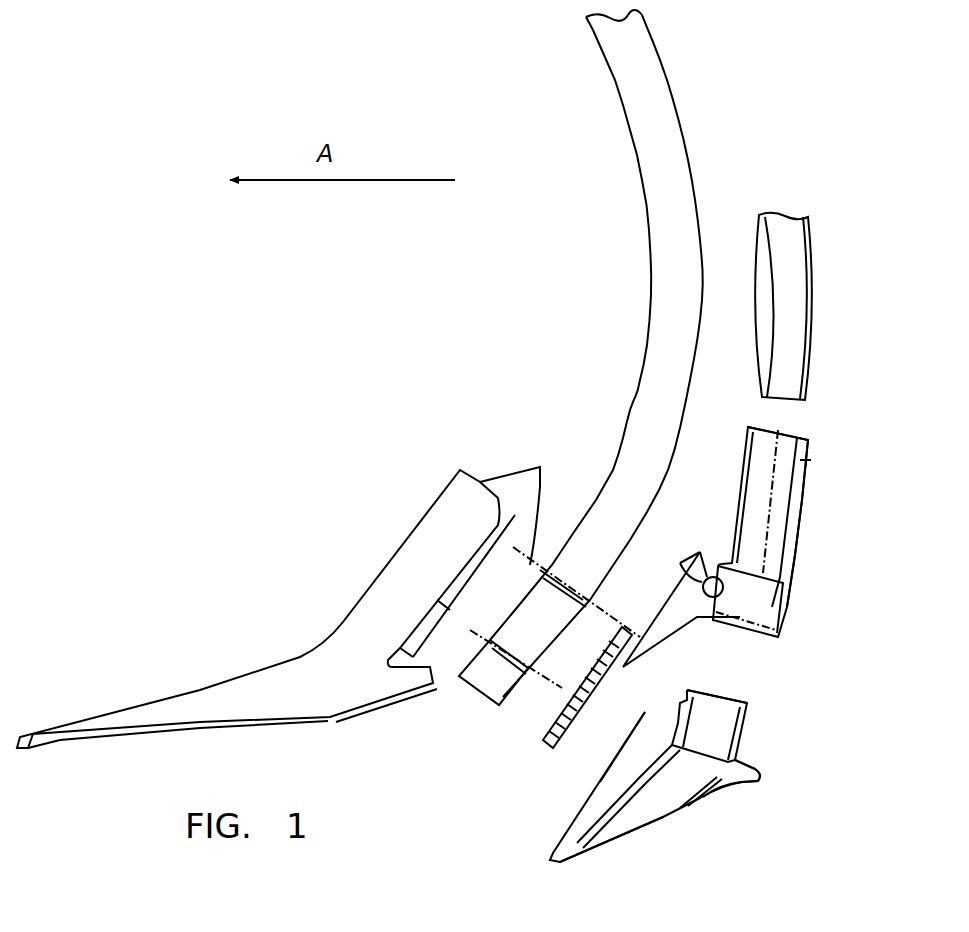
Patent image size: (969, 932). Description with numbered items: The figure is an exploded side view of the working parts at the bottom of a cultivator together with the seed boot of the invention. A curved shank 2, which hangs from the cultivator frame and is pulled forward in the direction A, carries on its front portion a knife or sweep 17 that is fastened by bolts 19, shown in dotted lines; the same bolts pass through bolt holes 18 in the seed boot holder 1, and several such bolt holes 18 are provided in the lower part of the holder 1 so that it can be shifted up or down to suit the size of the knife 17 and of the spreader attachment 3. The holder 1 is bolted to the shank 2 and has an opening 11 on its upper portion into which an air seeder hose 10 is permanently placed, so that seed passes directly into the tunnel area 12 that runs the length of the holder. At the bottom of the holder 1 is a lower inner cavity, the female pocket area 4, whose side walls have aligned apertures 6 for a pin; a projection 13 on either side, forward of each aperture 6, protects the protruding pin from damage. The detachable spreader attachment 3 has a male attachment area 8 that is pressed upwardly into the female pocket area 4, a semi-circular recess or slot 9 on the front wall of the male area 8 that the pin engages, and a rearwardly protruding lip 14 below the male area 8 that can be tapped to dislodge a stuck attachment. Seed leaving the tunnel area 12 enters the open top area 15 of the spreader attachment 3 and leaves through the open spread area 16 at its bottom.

The holder portion of the seed boot 1 is at (806, 511).
The shank 2 is at (692, 130).
The spreader attachment 3 is at (626, 810).
The female pocket area 4 is at (789, 608).
The apertures 6 is at (715, 599).
The male attachment area 8 is at (765, 761).
The semi-circular recess or slot 9 is at (680, 712).
The air seeder hose 10 is at (818, 297).
The opening on the upper portion of the seed boot holder 11 is at (781, 428).
The tunnel area 12 is at (792, 500).
The projection 13 is at (697, 583).
The lip 14 is at (759, 786).
The open top area 15 is at (725, 694).
The open spread area 16 is at (633, 840).
The knife or sweep 17 is at (386, 562).
The bolt holes 18 is at (543, 731).
The bolts 19 is at (540, 548).